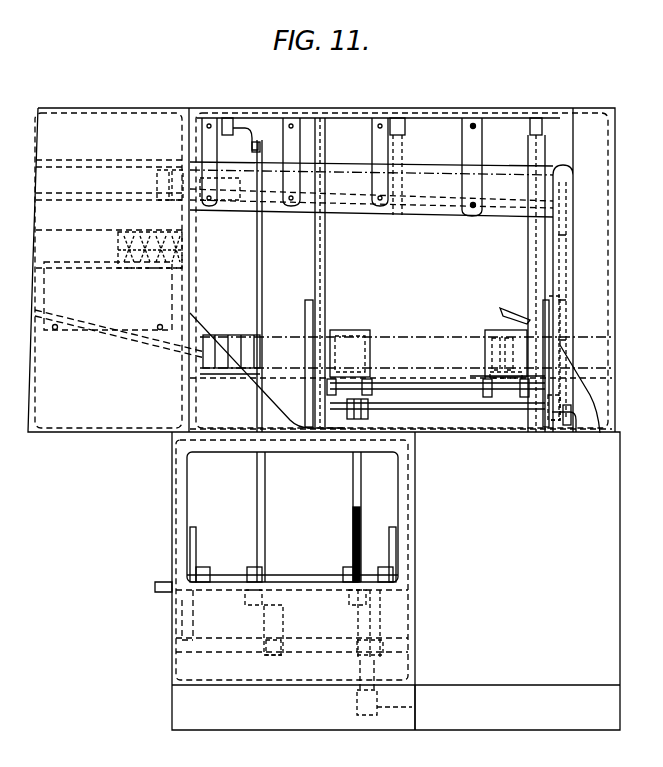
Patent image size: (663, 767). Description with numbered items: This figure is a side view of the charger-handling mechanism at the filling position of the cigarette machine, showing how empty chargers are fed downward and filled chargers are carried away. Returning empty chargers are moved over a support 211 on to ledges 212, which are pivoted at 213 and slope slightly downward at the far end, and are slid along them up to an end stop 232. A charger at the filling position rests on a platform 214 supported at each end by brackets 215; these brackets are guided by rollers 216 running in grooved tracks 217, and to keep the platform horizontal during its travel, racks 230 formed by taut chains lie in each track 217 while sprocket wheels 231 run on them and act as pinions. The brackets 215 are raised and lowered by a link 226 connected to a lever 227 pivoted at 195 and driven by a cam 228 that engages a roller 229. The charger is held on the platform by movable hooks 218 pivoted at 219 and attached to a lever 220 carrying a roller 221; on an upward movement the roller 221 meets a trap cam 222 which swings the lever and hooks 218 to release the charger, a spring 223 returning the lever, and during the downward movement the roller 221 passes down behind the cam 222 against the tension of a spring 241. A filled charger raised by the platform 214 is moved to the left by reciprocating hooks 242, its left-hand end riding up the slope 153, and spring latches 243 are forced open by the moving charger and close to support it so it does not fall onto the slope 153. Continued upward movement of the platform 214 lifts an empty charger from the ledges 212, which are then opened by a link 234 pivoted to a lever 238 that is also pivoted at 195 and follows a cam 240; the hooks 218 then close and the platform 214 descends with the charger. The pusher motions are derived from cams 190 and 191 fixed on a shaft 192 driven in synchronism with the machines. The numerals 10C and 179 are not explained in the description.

The terminal strip 10C is at (500, 178).
The slope 153 is at (168, 352).
The lower module frame 179 is at (330, 557).
The cam 190 is at (398, 548).
The cam 191 is at (192, 544).
The shaft 192 is at (294, 556).
The pivot 195 is at (330, 645).
The support 211 is at (147, 203).
The ledges 212 is at (452, 160).
The pivot 213 is at (427, 124).
The platform 214 is at (470, 376).
The brackets 215 is at (305, 312).
The rollers 216 is at (320, 306).
The grooved tracks 217 is at (327, 263).
The movable hooks 218 is at (402, 310).
The pivot 219 is at (380, 432).
The lever 220 is at (552, 482).
The roller 221 is at (552, 422).
The cam 222 is at (555, 338).
The spring 223 is at (250, 135).
The link 226 is at (358, 487).
The lever 227 is at (416, 711).
The cam 228 is at (352, 535).
The roller 229 is at (350, 582).
The racks 230 is at (322, 242).
The sprocket wheels 231 is at (345, 399).
The end stop 232 is at (566, 168).
The link 234 is at (258, 244).
The lever 238 is at (262, 626).
The cam 240 is at (262, 543).
The spring 241 is at (548, 297).
The reciprocating hooks 242 is at (503, 316).
The spring latches 243 is at (158, 298).